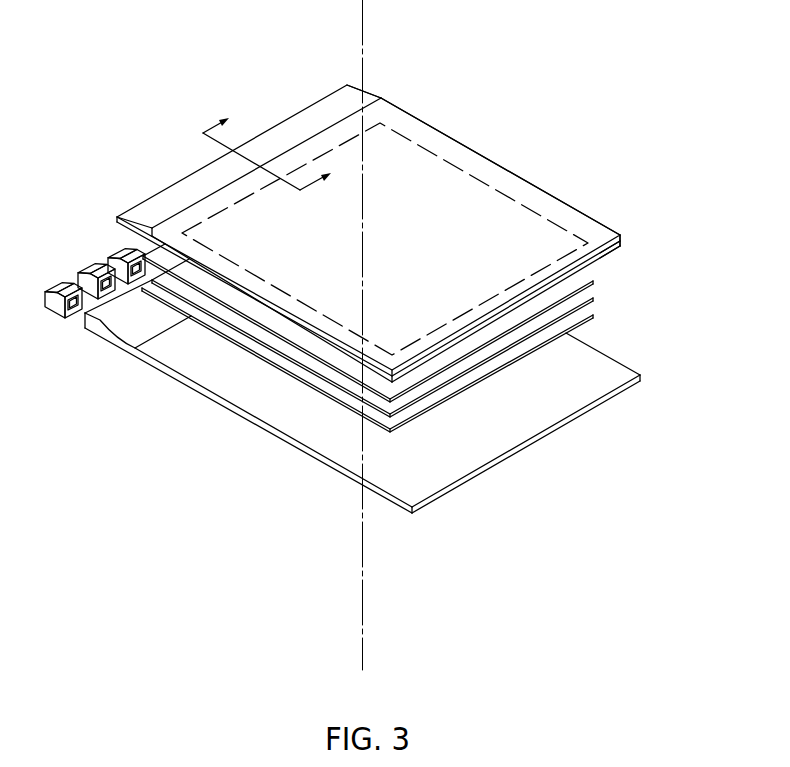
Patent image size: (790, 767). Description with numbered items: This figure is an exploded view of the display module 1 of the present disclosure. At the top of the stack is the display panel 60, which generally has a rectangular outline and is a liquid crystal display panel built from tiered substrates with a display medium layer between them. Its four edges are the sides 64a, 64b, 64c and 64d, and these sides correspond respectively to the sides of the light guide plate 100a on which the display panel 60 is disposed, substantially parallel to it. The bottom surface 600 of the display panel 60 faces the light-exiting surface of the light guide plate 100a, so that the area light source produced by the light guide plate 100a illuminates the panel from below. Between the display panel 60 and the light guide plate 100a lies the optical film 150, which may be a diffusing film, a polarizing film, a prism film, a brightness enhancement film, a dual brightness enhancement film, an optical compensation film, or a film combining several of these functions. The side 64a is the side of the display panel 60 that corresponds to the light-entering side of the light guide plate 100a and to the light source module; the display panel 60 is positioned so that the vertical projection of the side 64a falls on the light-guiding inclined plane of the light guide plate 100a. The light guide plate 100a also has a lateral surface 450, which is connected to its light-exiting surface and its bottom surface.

The display module 1 is at (84, 47).
The display panel 60 is at (485, 150).
The bottom surface 600 is at (618, 250).
The side 64a is at (300, 110).
The side 64b is at (257, 300).
The side 64c is at (488, 322).
The side 64d is at (368, 96).
The optical film 150 is at (600, 279).
The light guide plate 100a is at (627, 372).
The lateral surface 450 is at (603, 398).